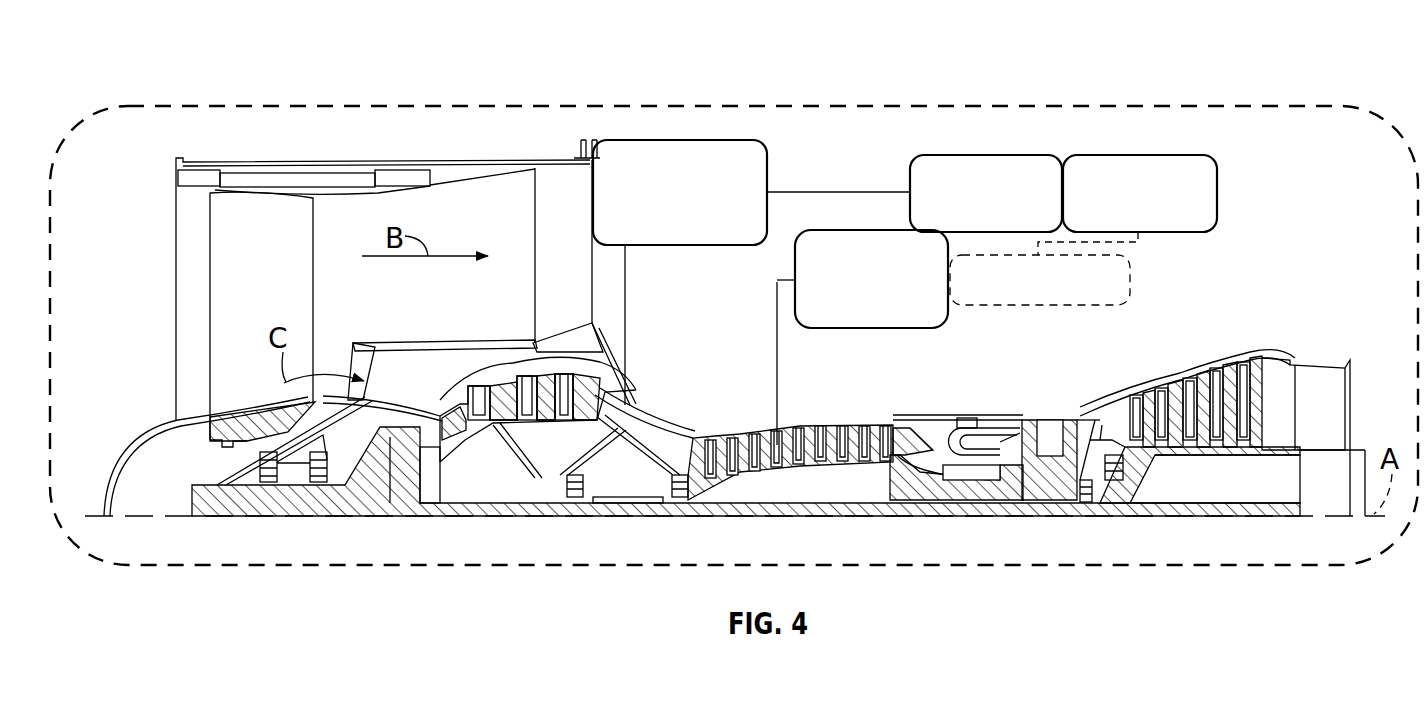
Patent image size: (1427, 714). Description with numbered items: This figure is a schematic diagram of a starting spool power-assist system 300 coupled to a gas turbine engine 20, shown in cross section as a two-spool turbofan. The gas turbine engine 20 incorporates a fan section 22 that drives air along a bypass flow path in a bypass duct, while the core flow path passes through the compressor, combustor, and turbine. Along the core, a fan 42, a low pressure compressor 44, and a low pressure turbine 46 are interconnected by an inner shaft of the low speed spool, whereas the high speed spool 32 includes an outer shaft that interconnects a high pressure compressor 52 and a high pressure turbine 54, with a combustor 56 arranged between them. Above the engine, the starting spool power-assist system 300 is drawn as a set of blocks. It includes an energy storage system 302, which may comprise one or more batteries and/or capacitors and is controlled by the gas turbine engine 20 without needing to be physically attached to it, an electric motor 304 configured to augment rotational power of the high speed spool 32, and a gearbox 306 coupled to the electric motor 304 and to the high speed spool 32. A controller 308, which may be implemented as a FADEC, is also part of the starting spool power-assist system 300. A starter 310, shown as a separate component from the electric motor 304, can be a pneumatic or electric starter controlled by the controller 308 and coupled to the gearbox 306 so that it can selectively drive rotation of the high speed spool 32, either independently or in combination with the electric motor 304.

The starting spool power-assist system 300 is at (150, 44).
The gas turbine engine 20 is at (168, 150).
The fan section 22 is at (274, 158).
The fan 42 is at (291, 290).
The low pressure compressor 44 is at (548, 398).
The high pressure compressor 52 is at (778, 478).
The high speed spool 32 is at (902, 434).
The combustor 56 is at (977, 432).
The high pressure turbine 54 is at (1052, 412).
The low pressure turbine 46 is at (1206, 395).
The energy storage system 302 is at (682, 140).
The electric motor 304 is at (986, 155).
The controller 308 is at (1140, 155).
The gearbox 306 is at (868, 330).
The starter 310 is at (1133, 273).